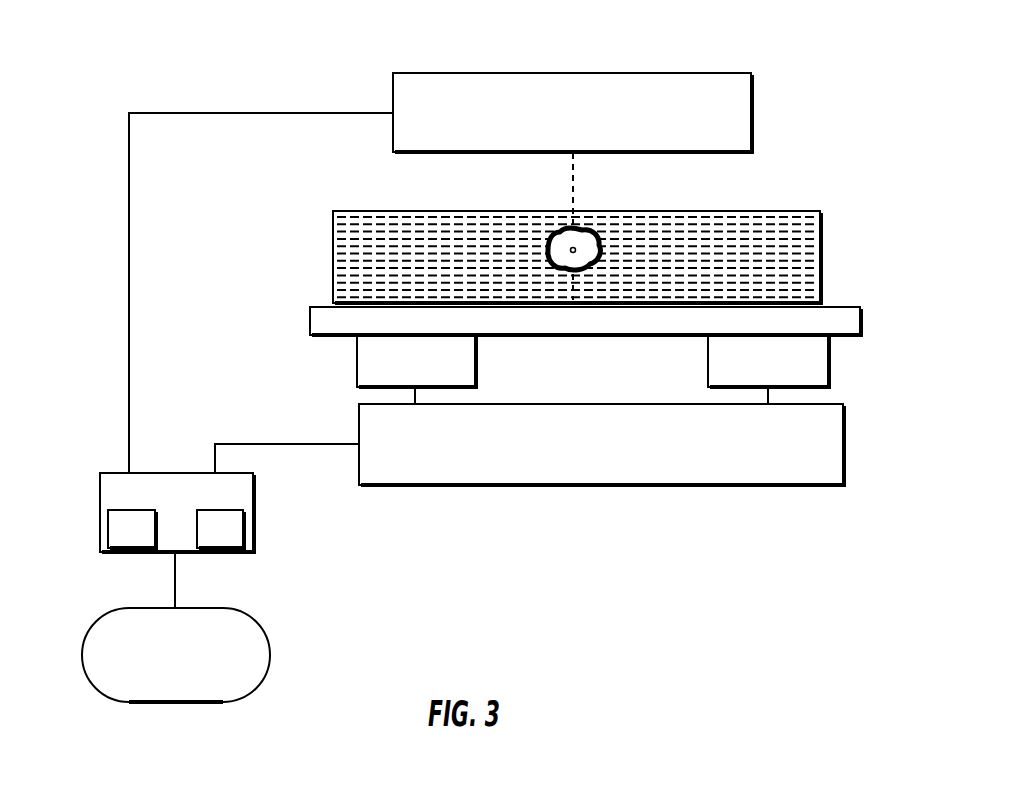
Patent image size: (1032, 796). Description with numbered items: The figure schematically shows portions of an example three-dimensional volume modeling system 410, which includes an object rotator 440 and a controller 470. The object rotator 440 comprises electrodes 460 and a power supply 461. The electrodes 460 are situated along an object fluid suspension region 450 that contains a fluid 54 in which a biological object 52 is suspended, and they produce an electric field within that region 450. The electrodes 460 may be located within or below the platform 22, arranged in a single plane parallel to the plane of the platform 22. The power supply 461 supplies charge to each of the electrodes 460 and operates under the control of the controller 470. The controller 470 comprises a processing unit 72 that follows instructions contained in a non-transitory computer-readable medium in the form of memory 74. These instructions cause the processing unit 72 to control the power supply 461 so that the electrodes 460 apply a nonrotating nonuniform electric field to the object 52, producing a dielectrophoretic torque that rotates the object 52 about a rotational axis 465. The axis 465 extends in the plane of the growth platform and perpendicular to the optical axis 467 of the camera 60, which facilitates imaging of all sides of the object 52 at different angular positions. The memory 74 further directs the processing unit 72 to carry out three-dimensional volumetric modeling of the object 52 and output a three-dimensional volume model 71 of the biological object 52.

The three-dimensional volume modeling system 410 is at (297, 80).
The camera 60 is at (753, 117).
The optical axis 467 is at (572, 187).
The rotational axis 465 is at (571, 250).
The biological object 52 is at (497, 219).
The fluid 54 is at (775, 242).
The object fluid suspension region 450 is at (599, 235).
The platform 22 is at (862, 325).
The object rotator 440 is at (316, 378).
The electrodes 460 is at (476, 365).
The power supply 461 is at (763, 487).
The controller 470 is at (162, 534).
The processing unit 72 is at (108, 526).
The memory 74 is at (244, 530).
The three-dimensional volume model 71 is at (270, 670).